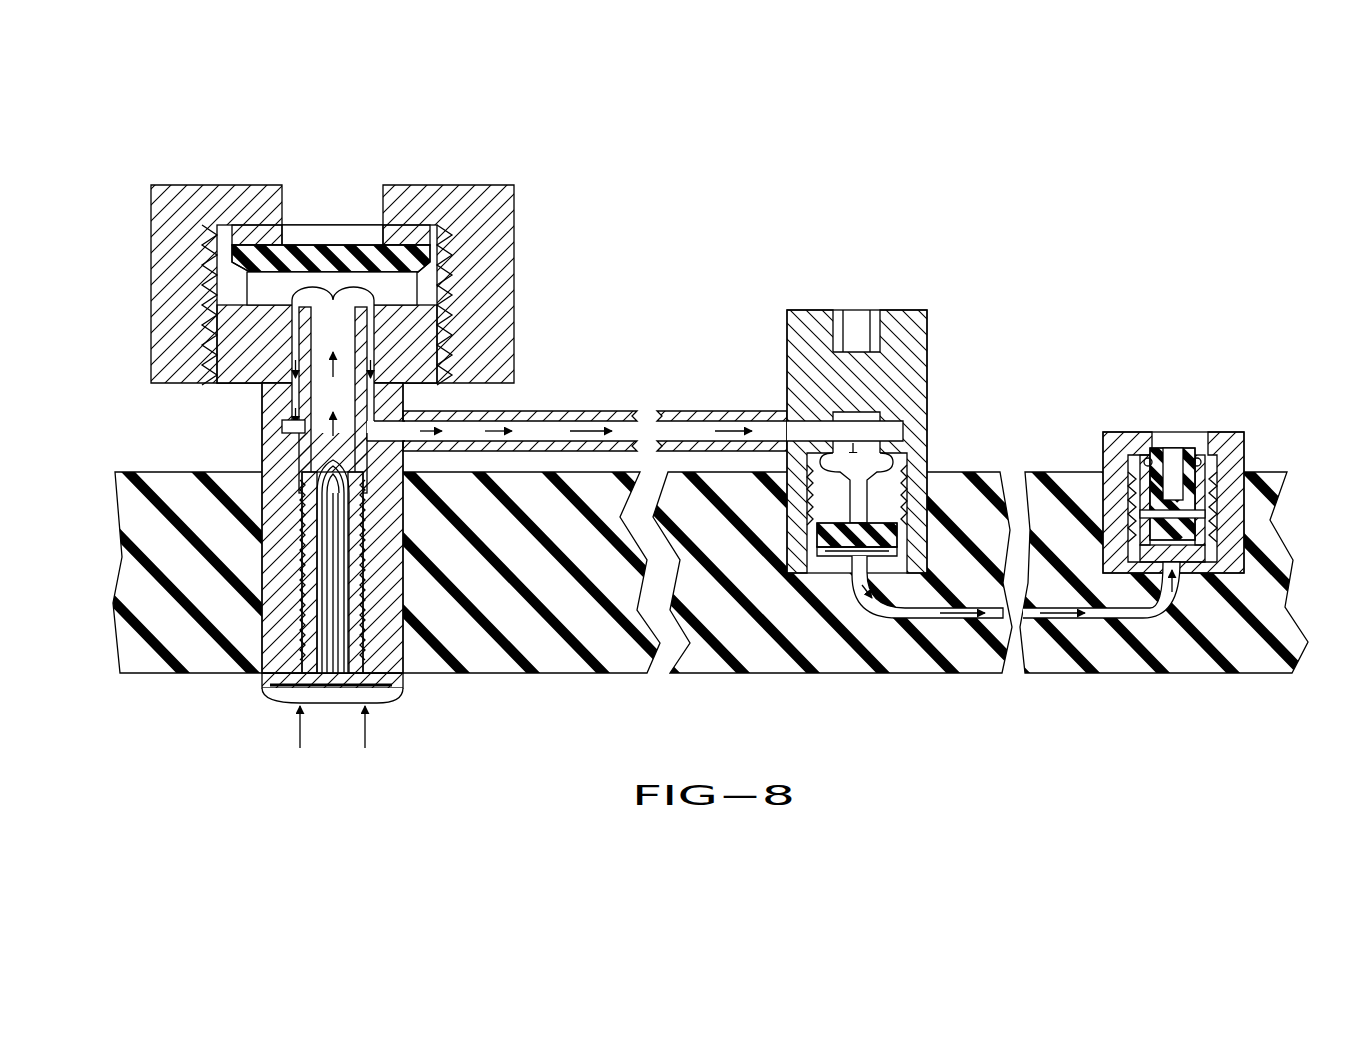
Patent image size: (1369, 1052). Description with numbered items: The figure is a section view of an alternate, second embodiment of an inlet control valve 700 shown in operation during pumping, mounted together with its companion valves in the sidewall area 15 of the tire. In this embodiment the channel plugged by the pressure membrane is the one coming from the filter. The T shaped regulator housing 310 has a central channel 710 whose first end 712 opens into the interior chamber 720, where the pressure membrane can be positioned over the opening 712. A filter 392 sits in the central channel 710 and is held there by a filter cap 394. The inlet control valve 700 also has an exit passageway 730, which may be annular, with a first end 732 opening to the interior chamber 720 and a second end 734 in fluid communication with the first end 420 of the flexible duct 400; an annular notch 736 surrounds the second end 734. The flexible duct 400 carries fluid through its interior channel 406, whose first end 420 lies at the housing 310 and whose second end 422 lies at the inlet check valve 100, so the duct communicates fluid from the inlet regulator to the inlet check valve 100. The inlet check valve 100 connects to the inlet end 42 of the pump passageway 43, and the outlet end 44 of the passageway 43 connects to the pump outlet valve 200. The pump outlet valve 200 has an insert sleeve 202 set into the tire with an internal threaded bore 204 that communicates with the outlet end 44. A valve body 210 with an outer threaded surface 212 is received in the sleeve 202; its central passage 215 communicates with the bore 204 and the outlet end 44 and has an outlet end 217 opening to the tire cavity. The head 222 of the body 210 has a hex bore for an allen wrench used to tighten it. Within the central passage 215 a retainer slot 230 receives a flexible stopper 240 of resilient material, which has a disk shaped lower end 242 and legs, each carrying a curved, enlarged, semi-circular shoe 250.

The sidewall area 15 is at (545, 645).
The inlet end 42 is at (855, 560).
The pump passageway 43 is at (928, 612).
The outlet end 44 is at (1180, 572).
The inlet check valve 100 is at (829, 441).
The pump outlet valve 200 is at (1189, 440).
The insert sleeve 202 is at (1255, 488).
The internal threaded bore 204 is at (1150, 456).
The valve body 210 is at (1135, 500).
The outer threaded surface 212 is at (1243, 555).
The central passage 215 is at (1173, 513).
The outlet end 217 is at (1165, 440).
The head 222 is at (1225, 455).
The retainer slot 230 is at (1195, 470).
The flexible stopper 240 is at (1190, 440).
The disk shaped lower end 242 is at (1165, 548).
The shoe 250 is at (1150, 460).
The T shaped regulator housing 310 is at (205, 325).
The filter 392 is at (358, 547).
The filter cap 394 is at (280, 693).
The flexible duct 400 is at (614, 412).
The interior channel 406 is at (692, 433).
The first end 420 is at (425, 432).
The second end 422 is at (797, 433).
The inlet control valve 700 is at (335, 401).
The central channel 710 is at (323, 373).
The first end 712 is at (317, 302).
The interior chamber 720 is at (440, 255).
The exit passageway 730 is at (372, 340).
The first end 732 is at (400, 284).
The second end 734 is at (378, 423).
The annular notch 736 is at (300, 440).